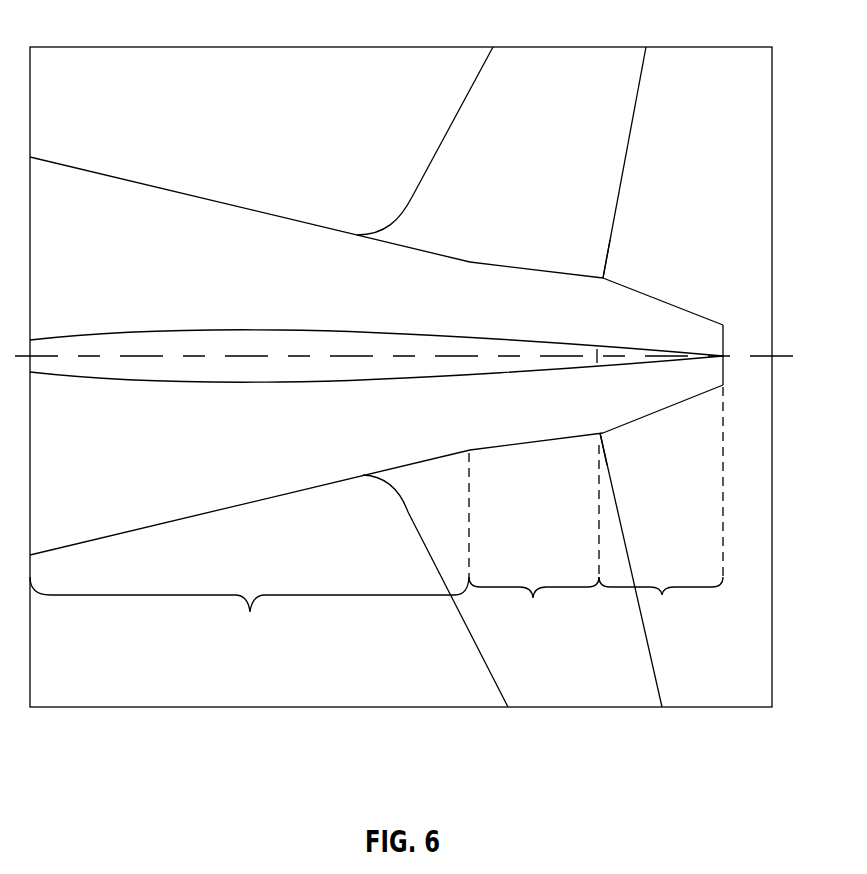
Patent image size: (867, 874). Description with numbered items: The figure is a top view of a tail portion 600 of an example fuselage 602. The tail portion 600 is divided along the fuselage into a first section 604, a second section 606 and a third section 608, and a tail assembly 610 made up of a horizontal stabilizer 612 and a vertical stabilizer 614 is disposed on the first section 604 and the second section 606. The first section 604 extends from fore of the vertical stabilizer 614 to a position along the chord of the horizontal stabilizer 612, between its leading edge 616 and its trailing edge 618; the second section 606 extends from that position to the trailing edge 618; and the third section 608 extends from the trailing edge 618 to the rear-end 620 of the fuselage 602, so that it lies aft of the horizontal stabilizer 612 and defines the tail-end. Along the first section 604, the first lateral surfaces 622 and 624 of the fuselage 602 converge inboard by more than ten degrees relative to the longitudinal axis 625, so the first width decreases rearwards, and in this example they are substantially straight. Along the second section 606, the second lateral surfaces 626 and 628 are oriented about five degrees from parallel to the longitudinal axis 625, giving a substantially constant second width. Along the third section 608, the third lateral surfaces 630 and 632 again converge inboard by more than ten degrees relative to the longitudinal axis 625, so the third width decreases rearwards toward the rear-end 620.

The tail portion 600 is at (132, 66).
The fuselage 602 is at (250, 350).
The first section 604 is at (250, 612).
The second section 606 is at (533, 598).
The third section 608 is at (662, 595).
The tail assembly 610 is at (428, 146).
The horizontal stabilizer 612 is at (605, 155).
The vertical stabilizer 614 is at (228, 340).
The leading edge 616 is at (412, 193).
The trailing edge 618 is at (612, 237).
The rear-end 620 is at (725, 335).
The first lateral surface 622 is at (165, 188).
The first lateral surface 624 is at (230, 510).
The longitudinal axis 625 is at (68, 357).
The second lateral surface 626 is at (543, 275).
The second lateral surface 628 is at (550, 437).
The third lateral surface 630 is at (705, 313).
The third lateral surface 632 is at (700, 393).